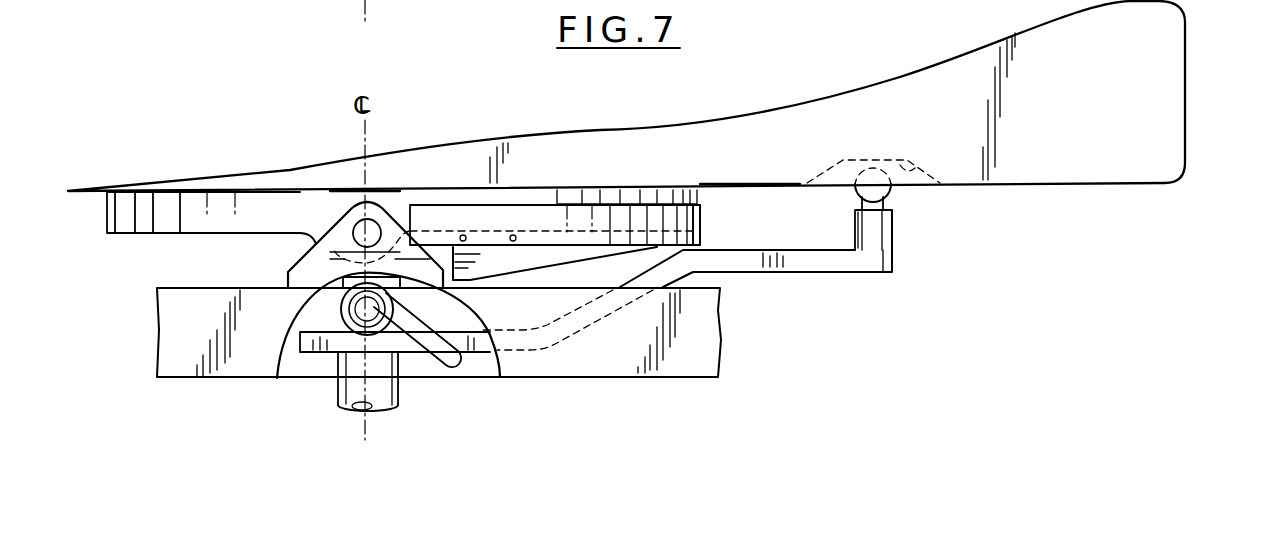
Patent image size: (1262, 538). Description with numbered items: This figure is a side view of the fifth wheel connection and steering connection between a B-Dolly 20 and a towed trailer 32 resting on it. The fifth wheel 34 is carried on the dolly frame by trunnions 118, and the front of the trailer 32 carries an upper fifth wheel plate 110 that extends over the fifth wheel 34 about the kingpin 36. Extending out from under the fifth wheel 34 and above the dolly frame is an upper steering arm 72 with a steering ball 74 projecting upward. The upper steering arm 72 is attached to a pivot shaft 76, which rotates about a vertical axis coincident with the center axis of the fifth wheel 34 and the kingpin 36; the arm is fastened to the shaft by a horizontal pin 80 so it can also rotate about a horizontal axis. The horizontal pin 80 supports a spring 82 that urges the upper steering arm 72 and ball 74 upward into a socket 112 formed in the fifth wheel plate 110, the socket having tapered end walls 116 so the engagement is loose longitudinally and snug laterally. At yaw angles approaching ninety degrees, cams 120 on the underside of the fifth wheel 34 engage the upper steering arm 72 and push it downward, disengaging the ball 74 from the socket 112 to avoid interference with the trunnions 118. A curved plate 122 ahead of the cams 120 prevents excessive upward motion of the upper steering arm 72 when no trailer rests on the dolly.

The B-Dolly 20 is at (688, 367).
The trailer 32 is at (1187, 96).
The fifth wheel 34 is at (107, 224).
The kingpin 36 is at (368, 188).
The upper steering arm 72 is at (750, 270).
The steering ball 74 is at (885, 195).
The pivot shaft 76 is at (400, 392).
The horizontal pin 80 is at (350, 314).
The spring 82 is at (453, 357).
The upper fifth wheel plate 110 is at (740, 187).
The socket 112 is at (850, 170).
The tapered end walls 116 is at (917, 168).
The trunnions 118 is at (355, 233).
The cams 120 is at (495, 258).
The curved plate 122 is at (700, 229).